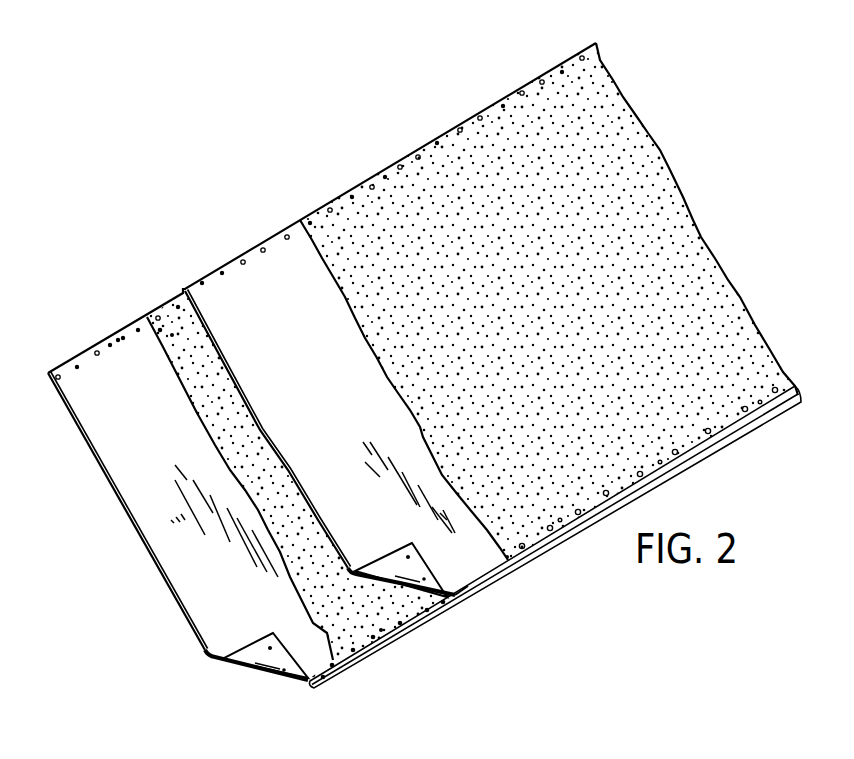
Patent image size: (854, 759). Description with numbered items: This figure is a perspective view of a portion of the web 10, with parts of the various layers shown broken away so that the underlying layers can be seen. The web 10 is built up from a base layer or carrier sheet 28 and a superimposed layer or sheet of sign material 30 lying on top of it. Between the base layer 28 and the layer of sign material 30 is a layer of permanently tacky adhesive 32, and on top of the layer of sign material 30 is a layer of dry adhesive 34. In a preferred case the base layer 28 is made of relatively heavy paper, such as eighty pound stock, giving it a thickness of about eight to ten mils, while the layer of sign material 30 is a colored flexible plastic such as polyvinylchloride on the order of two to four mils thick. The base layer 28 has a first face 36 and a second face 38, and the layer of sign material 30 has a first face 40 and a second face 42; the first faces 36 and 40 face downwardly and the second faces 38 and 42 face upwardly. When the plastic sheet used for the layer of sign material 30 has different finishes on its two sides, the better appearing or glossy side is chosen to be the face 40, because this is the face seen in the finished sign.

The web 10 is at (662, 136).
The base layer 28 is at (108, 437).
The layer of sign material 30 is at (245, 275).
The layer of permanently tacky adhesive 32 is at (365, 620).
The layer of dry adhesive 34 is at (463, 147).
The first face of the base layer 36 is at (255, 657).
The second face of the base layer 38 is at (197, 608).
The first face of the layer of sign material 40 is at (433, 597).
The second face of the layer of sign material 42 is at (463, 567).